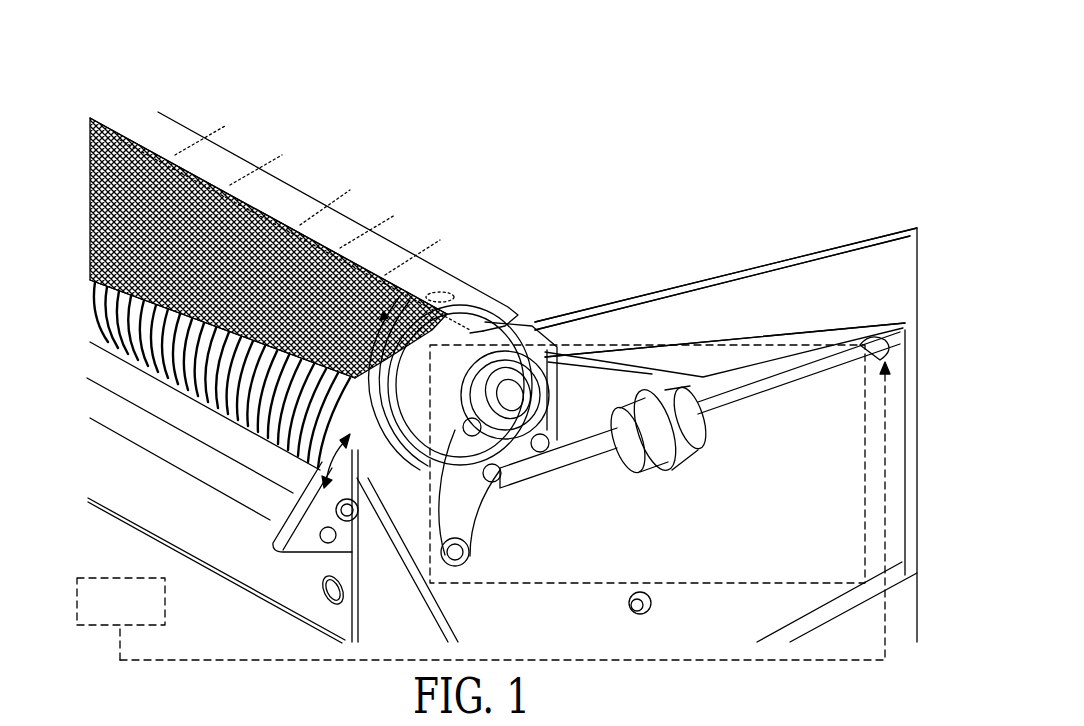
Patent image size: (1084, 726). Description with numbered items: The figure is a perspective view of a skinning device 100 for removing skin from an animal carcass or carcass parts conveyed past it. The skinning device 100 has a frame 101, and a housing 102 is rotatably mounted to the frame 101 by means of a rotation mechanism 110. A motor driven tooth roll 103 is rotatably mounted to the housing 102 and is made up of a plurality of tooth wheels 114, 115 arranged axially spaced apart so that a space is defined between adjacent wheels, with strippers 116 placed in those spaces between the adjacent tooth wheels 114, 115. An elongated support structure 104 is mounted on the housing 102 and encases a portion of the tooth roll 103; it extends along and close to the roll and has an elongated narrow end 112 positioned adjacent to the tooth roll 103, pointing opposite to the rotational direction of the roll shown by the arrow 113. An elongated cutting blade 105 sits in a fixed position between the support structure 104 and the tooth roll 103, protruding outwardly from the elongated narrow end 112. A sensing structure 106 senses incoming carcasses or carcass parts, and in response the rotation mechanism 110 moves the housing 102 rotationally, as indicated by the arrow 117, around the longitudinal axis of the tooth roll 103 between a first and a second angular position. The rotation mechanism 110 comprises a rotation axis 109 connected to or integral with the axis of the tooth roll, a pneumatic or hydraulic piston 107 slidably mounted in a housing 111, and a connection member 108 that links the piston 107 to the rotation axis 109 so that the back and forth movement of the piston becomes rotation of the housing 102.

The skinning device 100 is at (683, 188).
The frame 101 is at (634, 435).
The housing 102 is at (280, 560).
The motor driven tooth roll 103 is at (335, 250).
The elongated support structure 104 is at (388, 285).
The elongated cutting blade 105 is at (330, 210).
The sensing structure 106 is at (100, 578).
The piston 107 is at (612, 462).
The connection member 108 is at (505, 540).
The rotation axis 109 is at (580, 498).
The rotation mechanism 110 is at (738, 342).
The housing 111 is at (735, 405).
The elongated narrow end 112 is at (165, 163).
The arrow 113 is at (470, 340).
The tooth wheel 114 is at (450, 292).
The tooth wheel 115 is at (462, 258).
The strippers 116 is at (226, 438).
The arrow 117 is at (268, 532).